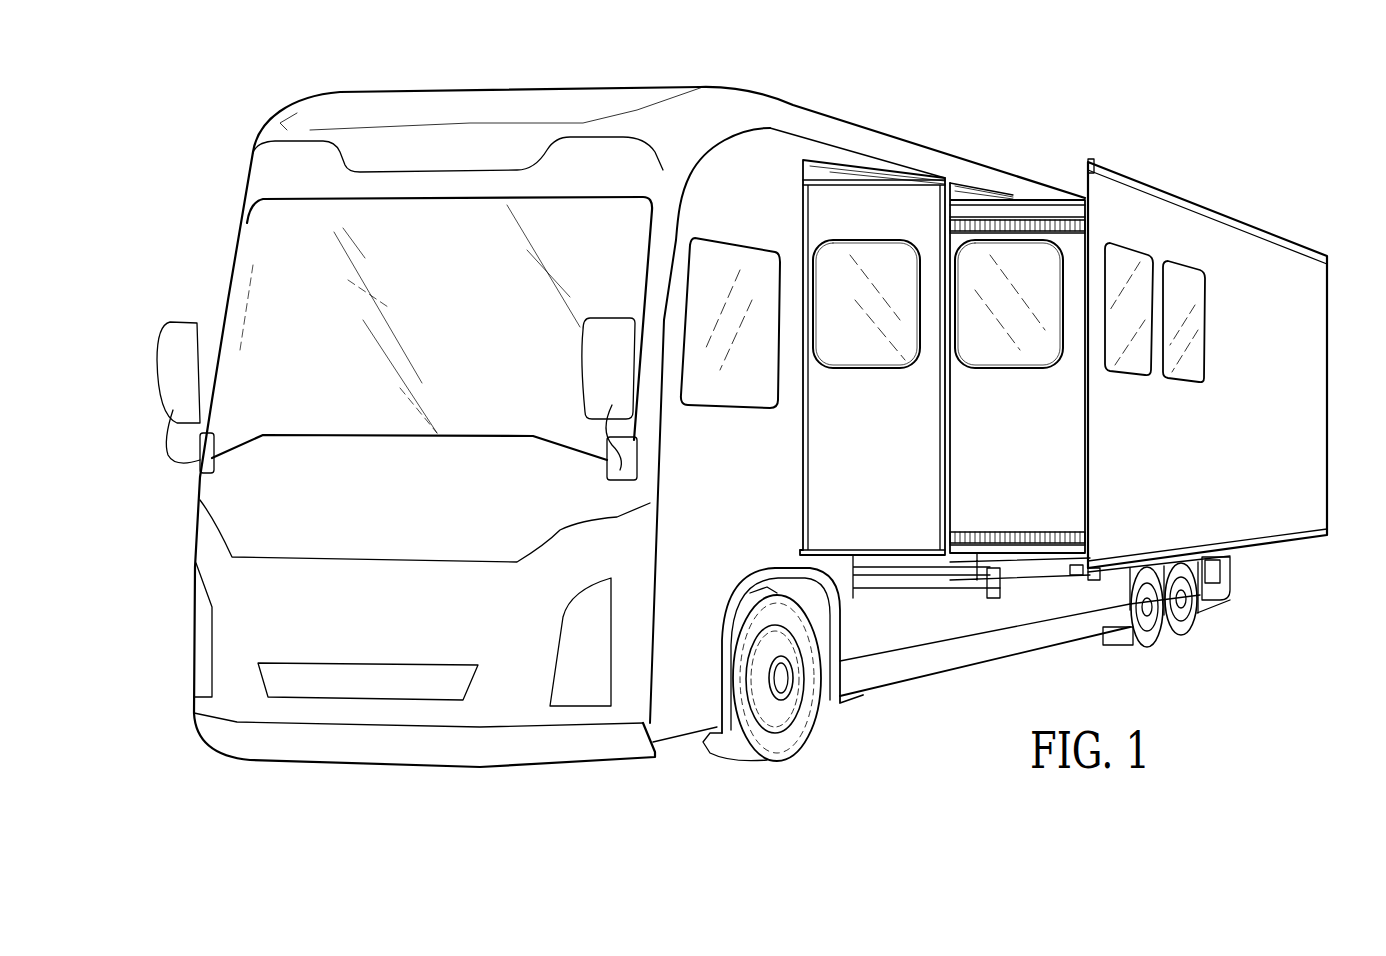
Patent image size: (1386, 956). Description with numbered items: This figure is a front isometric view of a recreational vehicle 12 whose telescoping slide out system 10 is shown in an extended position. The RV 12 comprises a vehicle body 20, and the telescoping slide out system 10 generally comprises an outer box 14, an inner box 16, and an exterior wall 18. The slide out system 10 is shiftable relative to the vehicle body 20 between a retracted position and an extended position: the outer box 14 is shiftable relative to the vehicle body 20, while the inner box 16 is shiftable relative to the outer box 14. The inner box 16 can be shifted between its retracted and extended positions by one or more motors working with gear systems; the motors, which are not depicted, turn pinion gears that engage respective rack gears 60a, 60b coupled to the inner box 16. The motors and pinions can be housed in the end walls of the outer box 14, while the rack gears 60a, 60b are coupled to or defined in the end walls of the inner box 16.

The telescoping slide out system 10 is at (1336, 281).
The recreational vehicle 12 is at (857, 106).
The outer box 14 is at (912, 197).
The inner box 16 is at (1015, 213).
The exterior wall 18 is at (1240, 250).
The vehicle body 20 is at (893, 150).
The rack gear 60a is at (972, 227).
The rack gear 60b is at (997, 537).